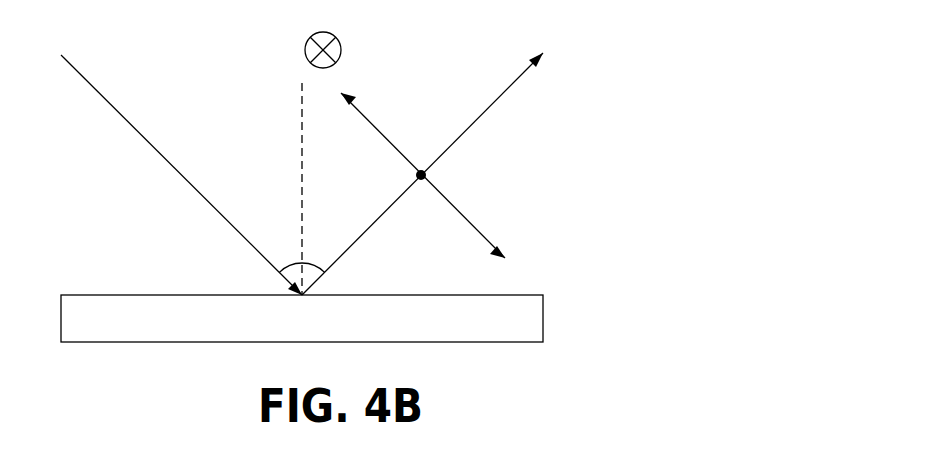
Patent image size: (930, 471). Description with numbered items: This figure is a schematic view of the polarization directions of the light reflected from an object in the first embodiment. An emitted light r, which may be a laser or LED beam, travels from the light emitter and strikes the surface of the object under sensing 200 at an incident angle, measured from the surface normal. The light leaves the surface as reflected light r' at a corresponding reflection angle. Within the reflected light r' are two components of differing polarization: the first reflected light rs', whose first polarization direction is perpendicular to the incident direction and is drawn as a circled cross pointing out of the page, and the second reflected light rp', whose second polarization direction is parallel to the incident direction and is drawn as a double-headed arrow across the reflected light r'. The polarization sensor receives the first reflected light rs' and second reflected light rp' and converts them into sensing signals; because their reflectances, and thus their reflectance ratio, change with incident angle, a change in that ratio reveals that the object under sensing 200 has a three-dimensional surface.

The object under sensing 200 is at (543, 317).
The emitted light r is at (172, 156).
The reflected light r' is at (438, 156).
The first reflected light rs' is at (398, 52).
The second reflected light rp' is at (571, 176).